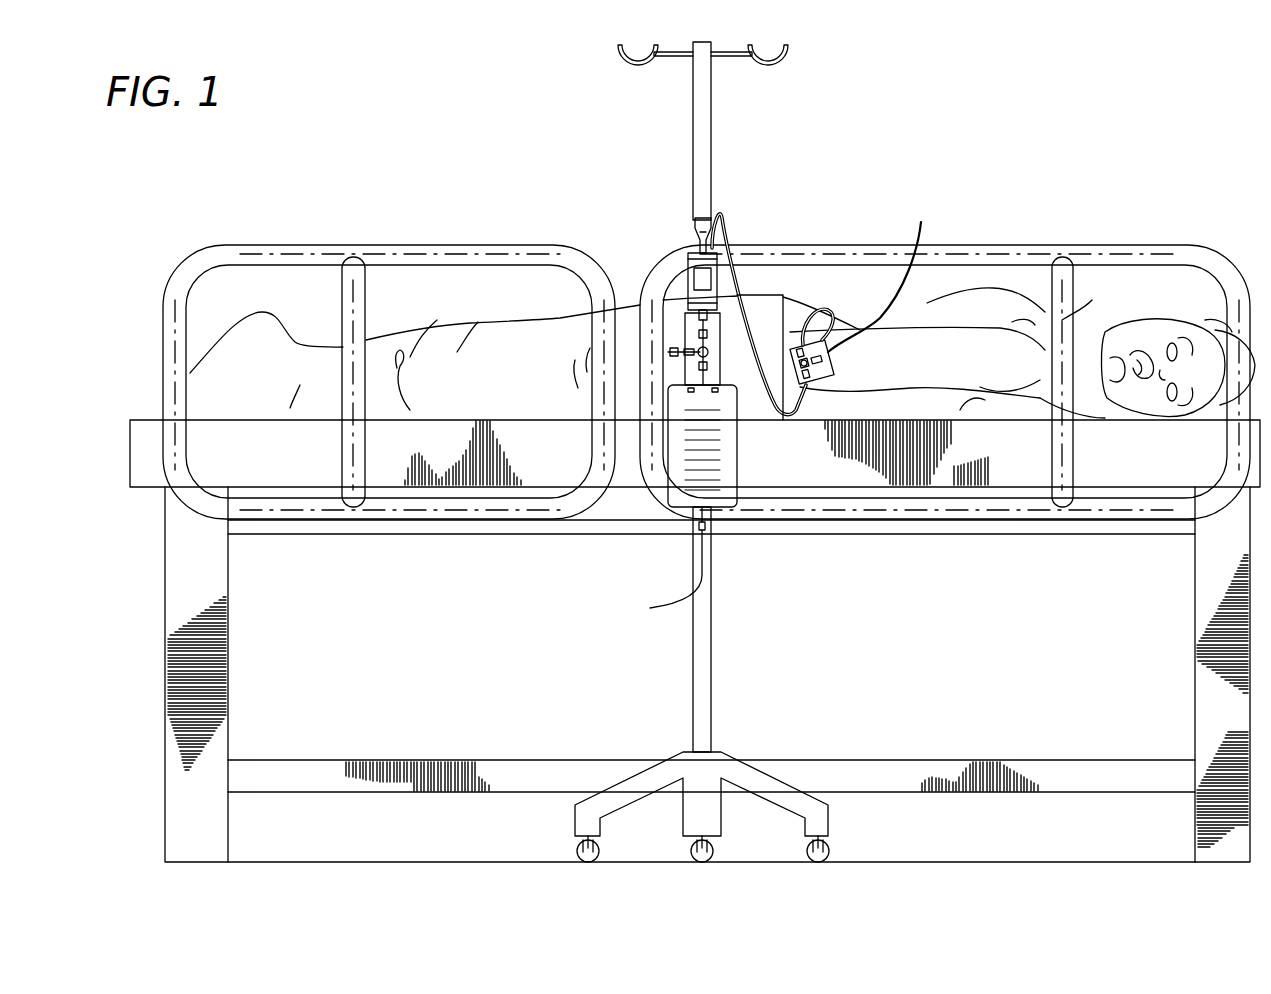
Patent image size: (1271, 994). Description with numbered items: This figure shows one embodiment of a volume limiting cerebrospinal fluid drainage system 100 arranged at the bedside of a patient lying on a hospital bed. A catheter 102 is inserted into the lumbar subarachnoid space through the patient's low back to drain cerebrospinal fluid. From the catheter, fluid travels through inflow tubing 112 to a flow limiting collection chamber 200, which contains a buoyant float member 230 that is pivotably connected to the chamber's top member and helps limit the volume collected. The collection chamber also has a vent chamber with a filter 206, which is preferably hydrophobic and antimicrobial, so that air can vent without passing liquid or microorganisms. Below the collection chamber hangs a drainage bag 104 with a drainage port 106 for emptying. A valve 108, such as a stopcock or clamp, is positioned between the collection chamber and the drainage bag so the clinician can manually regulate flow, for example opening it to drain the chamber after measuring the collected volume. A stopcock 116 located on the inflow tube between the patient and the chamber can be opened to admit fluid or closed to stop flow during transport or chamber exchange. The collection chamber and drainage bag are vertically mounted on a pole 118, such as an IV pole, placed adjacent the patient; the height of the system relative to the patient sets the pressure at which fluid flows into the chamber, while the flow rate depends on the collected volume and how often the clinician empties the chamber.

The fluid drainage system 100 is at (742, 218).
The catheter 102 is at (822, 346).
The drainage bag 104 is at (737, 497).
The drainage port 106 is at (702, 684).
The valve 108 is at (700, 351).
The inflow tubing 112 is at (716, 210).
The stopcock 116 is at (887, 273).
The pole 118 is at (712, 88).
The flow limiting collection chamber 200 is at (688, 278).
The filter 206 is at (700, 222).
The buoyant float member 230 is at (705, 278).